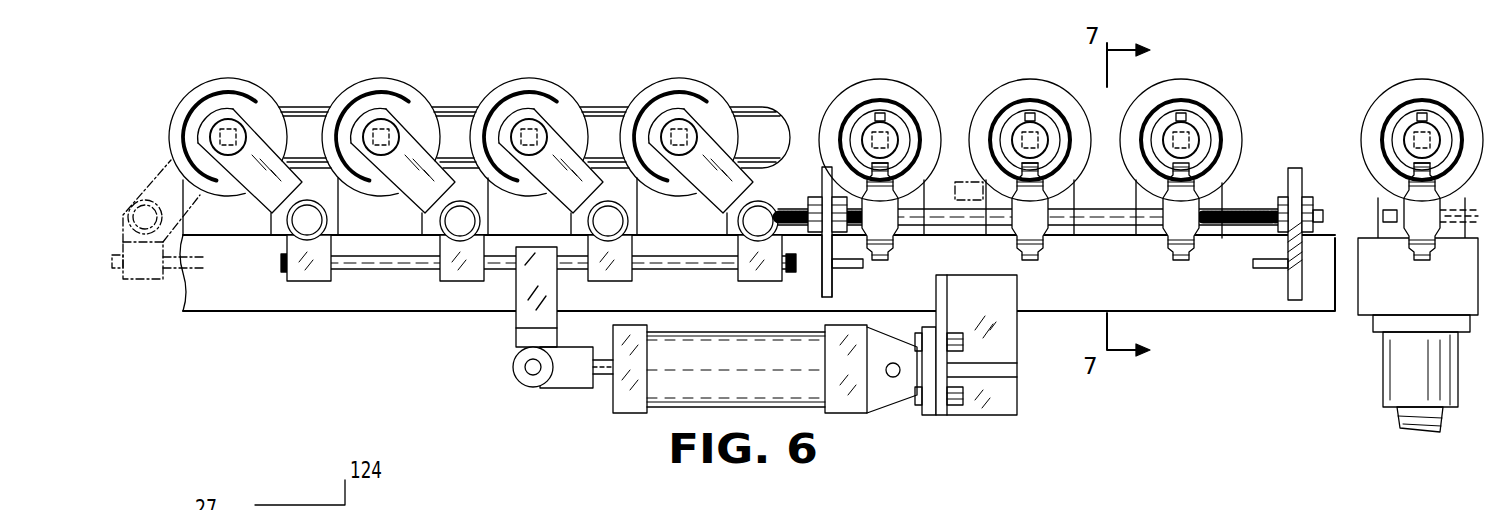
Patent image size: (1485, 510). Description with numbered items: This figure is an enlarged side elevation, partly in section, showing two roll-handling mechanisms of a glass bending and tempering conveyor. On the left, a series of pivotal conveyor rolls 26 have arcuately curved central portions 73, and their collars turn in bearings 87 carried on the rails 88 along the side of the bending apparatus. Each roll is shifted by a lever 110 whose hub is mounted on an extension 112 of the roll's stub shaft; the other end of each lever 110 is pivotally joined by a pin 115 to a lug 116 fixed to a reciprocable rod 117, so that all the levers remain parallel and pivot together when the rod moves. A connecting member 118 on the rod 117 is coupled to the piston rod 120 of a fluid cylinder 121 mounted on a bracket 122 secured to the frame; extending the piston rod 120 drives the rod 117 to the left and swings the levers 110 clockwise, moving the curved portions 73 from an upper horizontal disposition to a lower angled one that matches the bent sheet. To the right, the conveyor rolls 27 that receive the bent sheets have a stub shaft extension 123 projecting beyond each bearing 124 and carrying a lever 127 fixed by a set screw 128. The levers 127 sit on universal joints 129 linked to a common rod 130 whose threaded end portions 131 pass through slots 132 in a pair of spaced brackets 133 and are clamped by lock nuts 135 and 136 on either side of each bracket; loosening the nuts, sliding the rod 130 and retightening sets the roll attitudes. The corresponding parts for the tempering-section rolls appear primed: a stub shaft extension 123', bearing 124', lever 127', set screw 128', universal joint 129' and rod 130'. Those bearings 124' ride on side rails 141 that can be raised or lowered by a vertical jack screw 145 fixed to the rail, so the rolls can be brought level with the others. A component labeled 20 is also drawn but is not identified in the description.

The rim 20 is at (1381, 108).
The conveyor rolls 26 is at (287, 100).
The conveyor rolls 27 is at (850, 110).
The curved portions 73 is at (310, 120).
The bearing 87 is at (182, 108).
The rails 88 is at (195, 296).
The lever 110 is at (262, 200).
The extension 112 is at (226, 118).
The pin 115 is at (298, 228).
The lug 116 is at (298, 277).
The reciprocable rod 117 is at (386, 263).
The connecting member 118 is at (522, 305).
The piston rod 120 is at (600, 378).
The fluid cylinder 121 is at (710, 376).
The bracket 122 is at (1003, 403).
The stub shaft extension 123 is at (1042, 105).
The stub shaft extension 123' is at (1386, 127).
The bearing 124 is at (1053, 106).
The bearings 124' is at (1422, 110).
The lever 127 is at (953, 157).
The lever 127' is at (1371, 180).
The set screw 128 is at (1069, 71).
The set screw 128' is at (1440, 86).
The universal joint 129 is at (1030, 194).
The universal joint 129' is at (1431, 236).
The common rod 130 is at (1039, 245).
The rod 130' is at (1418, 249).
The threaded end portions 131 is at (794, 228).
The slots 132 is at (1295, 168).
The brackets 133 is at (827, 297).
The lock nut 135 is at (846, 233).
The lock nut 136 is at (812, 200).
The side rails 141 is at (1368, 308).
The screw 145 is at (1405, 435).